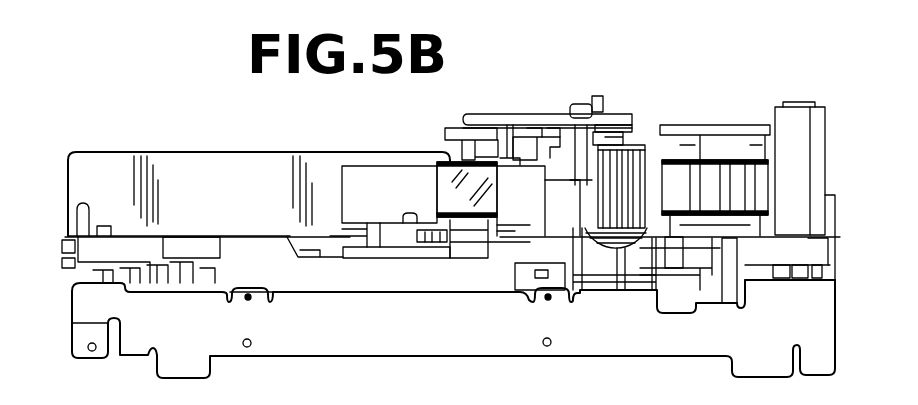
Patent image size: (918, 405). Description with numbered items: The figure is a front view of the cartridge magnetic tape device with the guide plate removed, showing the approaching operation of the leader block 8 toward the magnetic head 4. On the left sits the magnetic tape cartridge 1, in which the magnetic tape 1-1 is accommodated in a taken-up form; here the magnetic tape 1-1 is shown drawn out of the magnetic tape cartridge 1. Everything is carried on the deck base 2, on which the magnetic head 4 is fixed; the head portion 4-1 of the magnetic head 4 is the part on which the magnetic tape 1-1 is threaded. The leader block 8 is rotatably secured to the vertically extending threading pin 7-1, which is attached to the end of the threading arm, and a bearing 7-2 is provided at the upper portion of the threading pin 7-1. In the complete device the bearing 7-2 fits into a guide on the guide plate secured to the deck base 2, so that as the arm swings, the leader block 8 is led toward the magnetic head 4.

The magnetic tape cartridge 1 is at (233, 171).
The magnetic tape 1-1 is at (440, 185).
The deck base 2 is at (92, 258).
The magnetic head 4 is at (618, 254).
The head portion 4-1 is at (620, 166).
The threading pin 7-1 is at (583, 145).
The bearing 7-2 is at (573, 105).
The leader block 8 is at (513, 178).